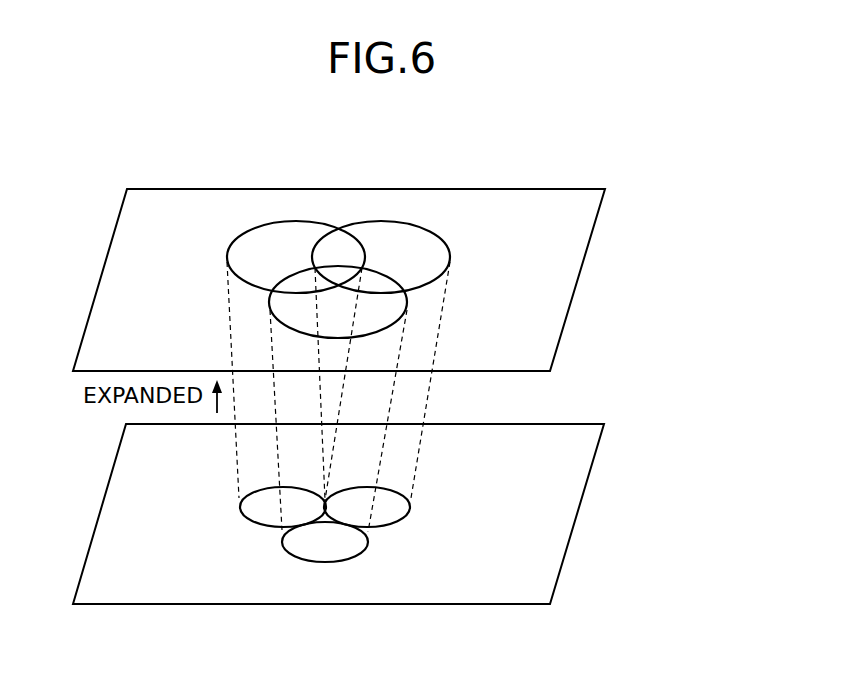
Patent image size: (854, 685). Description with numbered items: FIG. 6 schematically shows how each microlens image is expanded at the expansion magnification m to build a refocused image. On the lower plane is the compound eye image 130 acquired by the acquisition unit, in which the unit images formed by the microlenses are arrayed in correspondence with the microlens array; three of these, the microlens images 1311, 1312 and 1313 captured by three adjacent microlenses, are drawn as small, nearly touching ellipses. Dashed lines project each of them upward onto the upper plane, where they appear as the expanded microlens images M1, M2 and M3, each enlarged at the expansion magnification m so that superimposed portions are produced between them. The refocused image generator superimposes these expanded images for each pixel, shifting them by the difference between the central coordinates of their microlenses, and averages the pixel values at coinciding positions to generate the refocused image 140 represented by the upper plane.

The refocused image 140 is at (587, 257).
The compound eye image 130 is at (580, 516).
The expanded microlens image M1 is at (290, 236).
The expanded microlens image M2 is at (394, 237).
The expanded microlens image M3 is at (385, 309).
The microlens image 1311 is at (259, 507).
The microlens image 1312 is at (392, 507).
The microlens image 1313 is at (323, 548).